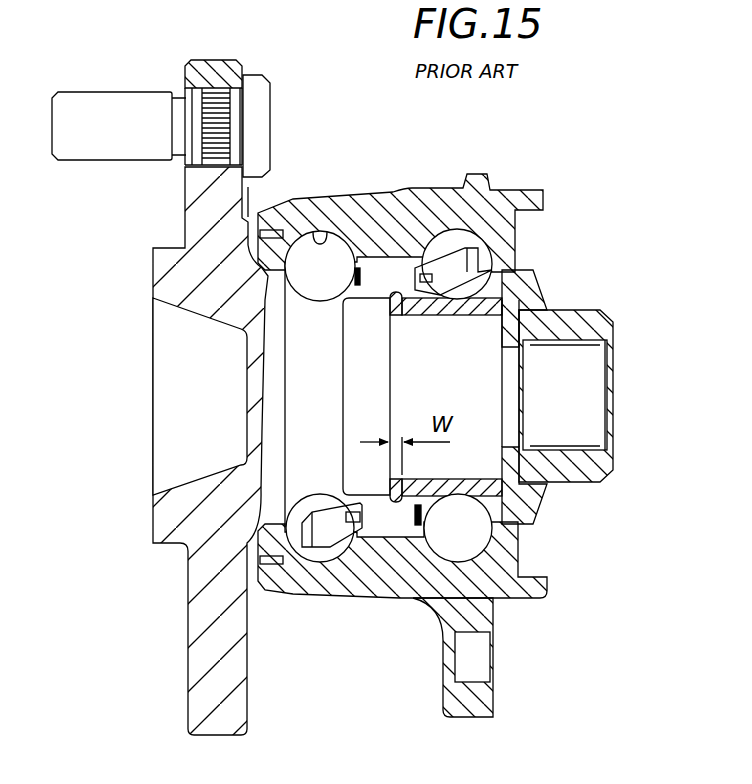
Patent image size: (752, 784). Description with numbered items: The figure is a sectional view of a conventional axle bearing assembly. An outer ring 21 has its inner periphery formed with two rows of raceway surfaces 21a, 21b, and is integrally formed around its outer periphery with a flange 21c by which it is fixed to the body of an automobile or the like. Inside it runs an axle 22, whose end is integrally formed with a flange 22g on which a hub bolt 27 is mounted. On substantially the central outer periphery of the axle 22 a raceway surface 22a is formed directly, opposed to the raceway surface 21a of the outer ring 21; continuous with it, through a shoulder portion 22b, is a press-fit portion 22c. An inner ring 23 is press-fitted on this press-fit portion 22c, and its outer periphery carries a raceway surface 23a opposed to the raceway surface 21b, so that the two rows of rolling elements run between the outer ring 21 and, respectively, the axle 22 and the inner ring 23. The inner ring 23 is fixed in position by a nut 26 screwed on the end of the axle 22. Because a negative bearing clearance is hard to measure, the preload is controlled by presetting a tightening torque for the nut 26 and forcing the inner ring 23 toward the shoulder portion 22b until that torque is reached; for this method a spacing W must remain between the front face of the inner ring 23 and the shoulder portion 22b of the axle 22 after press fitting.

The outer ring 21 is at (431, 411).
The raceway surface 21a is at (315, 236).
The raceway surface 21b is at (446, 243).
The flange 21c is at (490, 688).
The axle 22 is at (146, 292).
The raceway surface 22a is at (303, 290).
The shoulder portion 22b is at (410, 308).
The press-fit portion 22c is at (482, 317).
The flange 22g is at (213, 68).
The inner ring 23 is at (528, 263).
The raceway surface 23a is at (521, 270).
The nut 26 is at (590, 316).
The hub bolt 27 is at (122, 110).